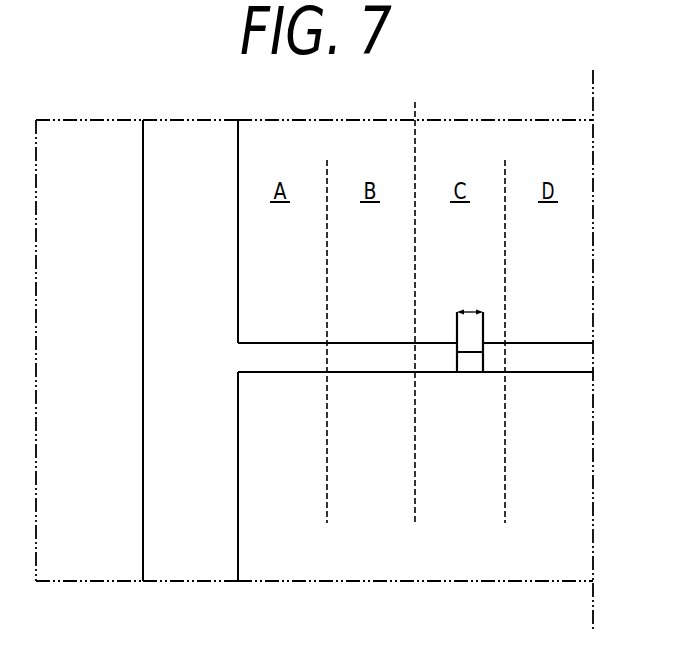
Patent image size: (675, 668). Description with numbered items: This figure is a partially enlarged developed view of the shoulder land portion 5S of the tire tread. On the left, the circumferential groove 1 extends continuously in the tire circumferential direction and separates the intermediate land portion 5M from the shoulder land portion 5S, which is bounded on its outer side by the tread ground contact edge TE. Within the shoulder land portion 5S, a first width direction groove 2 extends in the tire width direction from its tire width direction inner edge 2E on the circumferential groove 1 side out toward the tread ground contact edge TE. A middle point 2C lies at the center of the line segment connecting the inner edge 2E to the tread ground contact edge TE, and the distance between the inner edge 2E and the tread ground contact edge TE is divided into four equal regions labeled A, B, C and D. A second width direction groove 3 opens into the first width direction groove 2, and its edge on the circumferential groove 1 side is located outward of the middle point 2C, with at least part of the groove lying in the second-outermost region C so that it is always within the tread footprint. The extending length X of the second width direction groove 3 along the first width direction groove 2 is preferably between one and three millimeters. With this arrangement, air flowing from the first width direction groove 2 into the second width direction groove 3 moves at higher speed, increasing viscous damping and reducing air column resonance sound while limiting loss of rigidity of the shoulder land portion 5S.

The circumferential groove 1 is at (195, 560).
The first width direction groove 2 is at (557, 358).
The middle point 2C is at (415, 297).
The tire width direction inner edge 2E is at (238, 358).
The second width direction groove 3 is at (470, 358).
The intermediate land portion 5M is at (86, 588).
The shoulder land portion 5S is at (415, 588).
The tread ground contact edge TE is at (593, 336).
The extending length X is at (470, 302).